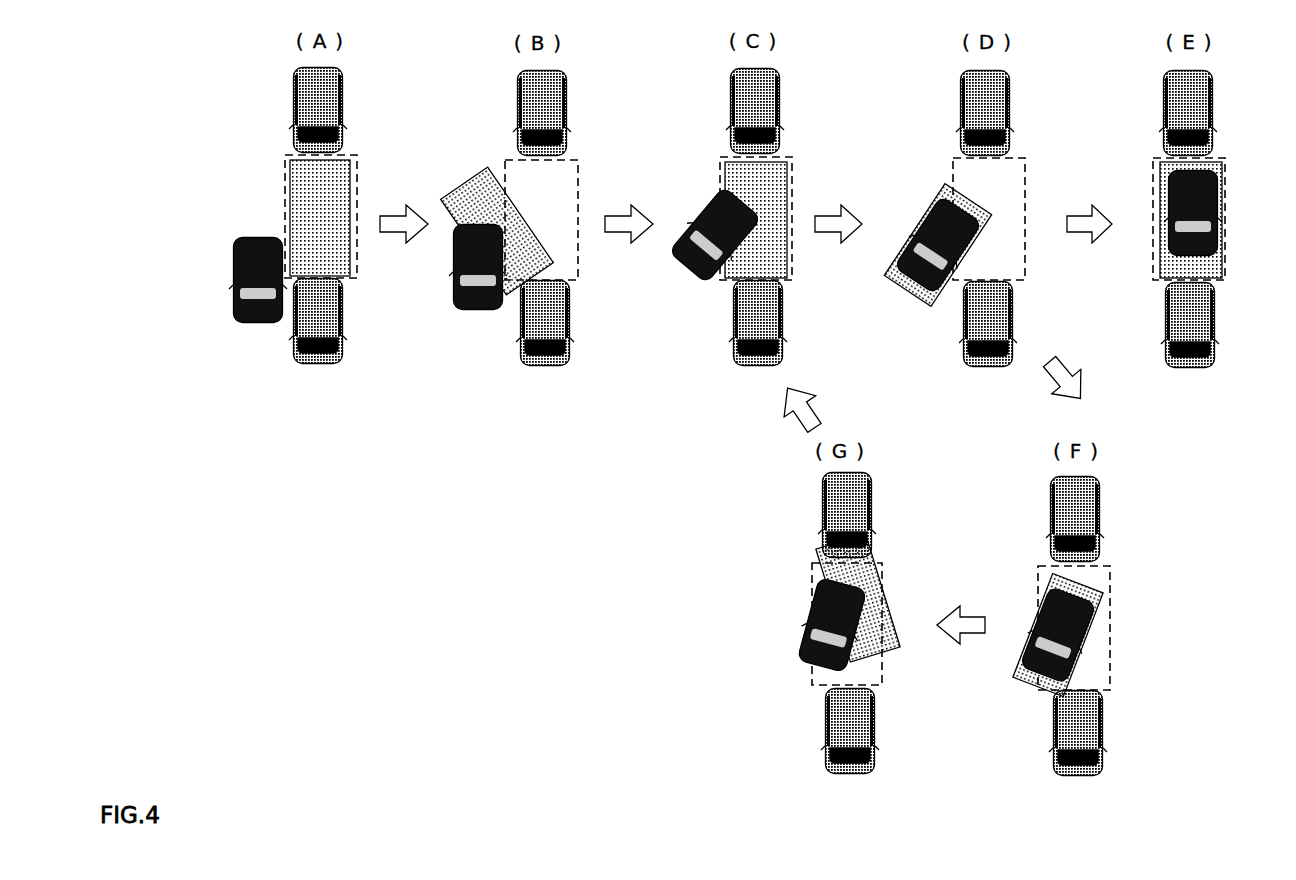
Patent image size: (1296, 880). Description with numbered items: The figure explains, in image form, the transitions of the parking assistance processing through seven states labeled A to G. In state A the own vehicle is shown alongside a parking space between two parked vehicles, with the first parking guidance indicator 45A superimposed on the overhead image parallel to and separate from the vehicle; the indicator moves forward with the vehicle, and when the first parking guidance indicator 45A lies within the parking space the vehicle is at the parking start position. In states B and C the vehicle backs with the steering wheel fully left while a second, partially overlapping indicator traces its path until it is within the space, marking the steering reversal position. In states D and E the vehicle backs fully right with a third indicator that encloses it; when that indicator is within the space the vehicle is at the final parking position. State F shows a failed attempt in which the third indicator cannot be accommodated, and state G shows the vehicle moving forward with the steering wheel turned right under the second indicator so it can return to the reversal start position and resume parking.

The first parking guidance indicator 45A is at (291, 192).